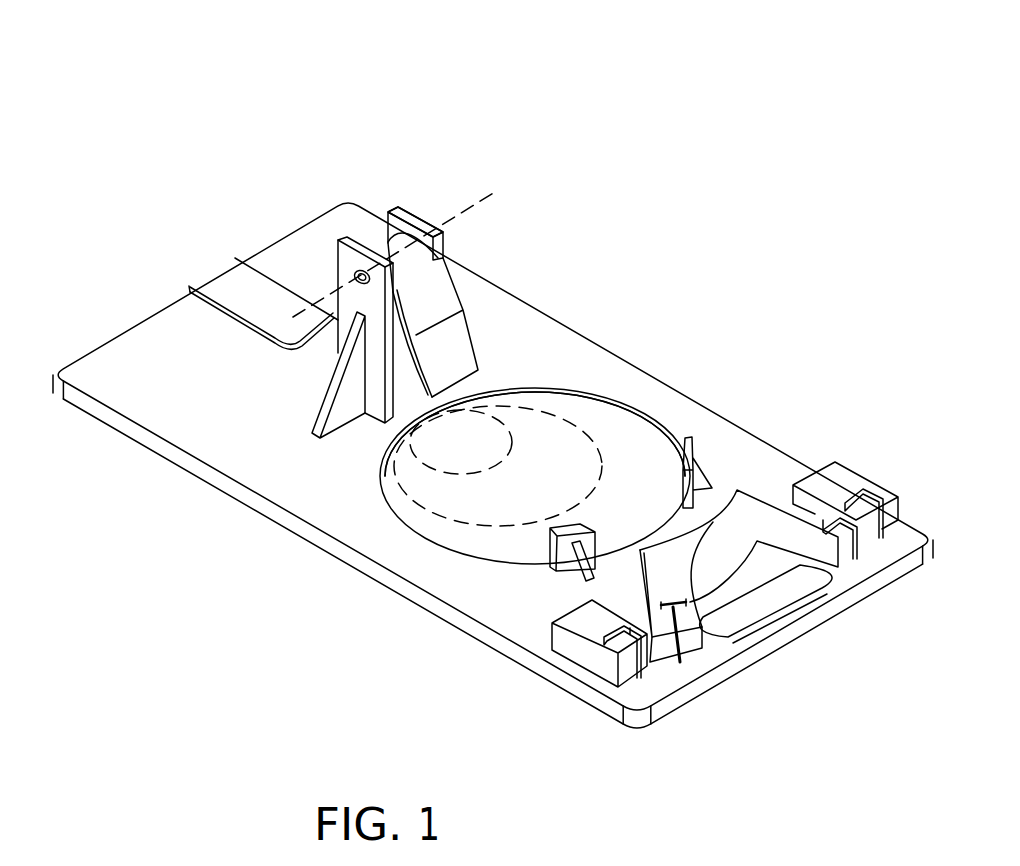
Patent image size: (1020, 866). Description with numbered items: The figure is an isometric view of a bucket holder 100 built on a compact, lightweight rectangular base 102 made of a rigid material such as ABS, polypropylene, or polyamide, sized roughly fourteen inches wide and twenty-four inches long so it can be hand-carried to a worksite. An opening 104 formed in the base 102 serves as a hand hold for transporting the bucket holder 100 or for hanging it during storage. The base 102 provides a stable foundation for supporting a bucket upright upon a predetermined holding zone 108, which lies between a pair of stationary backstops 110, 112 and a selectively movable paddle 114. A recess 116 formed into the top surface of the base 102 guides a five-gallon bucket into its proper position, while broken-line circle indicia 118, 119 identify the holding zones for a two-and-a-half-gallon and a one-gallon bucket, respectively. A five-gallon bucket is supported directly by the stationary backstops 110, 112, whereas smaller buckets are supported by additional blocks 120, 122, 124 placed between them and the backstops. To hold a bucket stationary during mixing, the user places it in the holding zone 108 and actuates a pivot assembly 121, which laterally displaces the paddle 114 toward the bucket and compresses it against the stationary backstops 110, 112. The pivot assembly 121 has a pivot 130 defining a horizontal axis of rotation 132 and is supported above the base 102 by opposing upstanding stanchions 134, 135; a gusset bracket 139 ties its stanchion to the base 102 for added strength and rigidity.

The bucket holder 100 is at (532, 133).
The base 102 is at (107, 393).
The opening 104 is at (773, 583).
The holding zone 108 is at (452, 533).
The stationary backstop 110 is at (587, 623).
The stationary backstop 112 is at (686, 450).
The paddle 114 is at (451, 305).
The recess 116 is at (643, 420).
The indicia 118 is at (593, 485).
The indicia 119 is at (507, 453).
The block 120 is at (552, 535).
The pivot assembly 121 is at (433, 216).
The block 122 is at (838, 478).
The block 124 is at (670, 580).
The pivot 130 is at (349, 279).
The horizontal axis of rotation 132 is at (484, 200).
The stanchion 134 is at (345, 257).
The stanchion 135 is at (355, 200).
The gusset bracket 139 is at (343, 417).